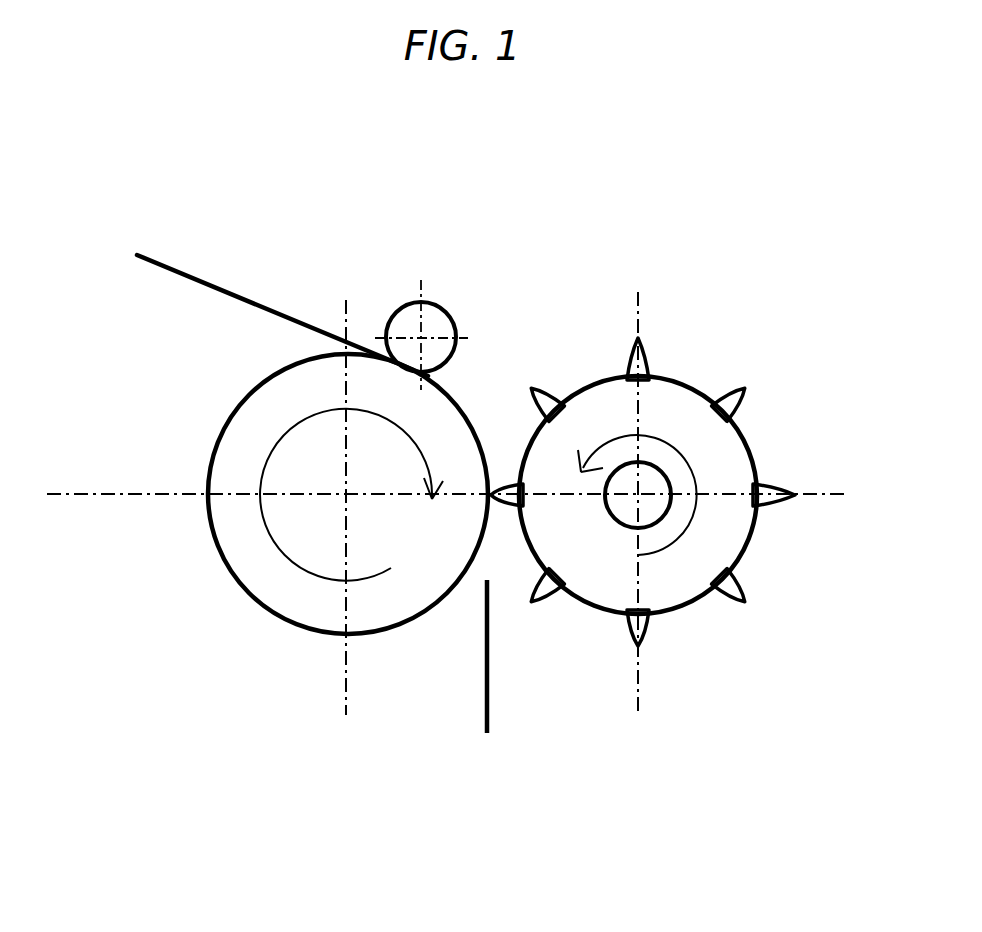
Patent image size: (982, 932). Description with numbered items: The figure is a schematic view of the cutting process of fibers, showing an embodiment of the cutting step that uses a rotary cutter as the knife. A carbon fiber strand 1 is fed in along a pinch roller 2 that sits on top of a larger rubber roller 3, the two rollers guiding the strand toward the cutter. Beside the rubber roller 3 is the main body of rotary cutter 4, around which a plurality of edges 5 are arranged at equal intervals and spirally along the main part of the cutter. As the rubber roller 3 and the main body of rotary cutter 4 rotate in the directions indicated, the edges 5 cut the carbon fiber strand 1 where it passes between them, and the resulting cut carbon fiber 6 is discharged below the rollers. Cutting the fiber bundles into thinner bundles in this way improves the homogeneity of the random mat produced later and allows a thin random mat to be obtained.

The carbon fiber strand 1 is at (205, 272).
The pinch roller 2 is at (443, 292).
The rubber roller 3 is at (262, 575).
The main body of rotary cutter 4 is at (690, 369).
The edge 5 is at (742, 614).
The cut carbon fiber 6 is at (497, 693).